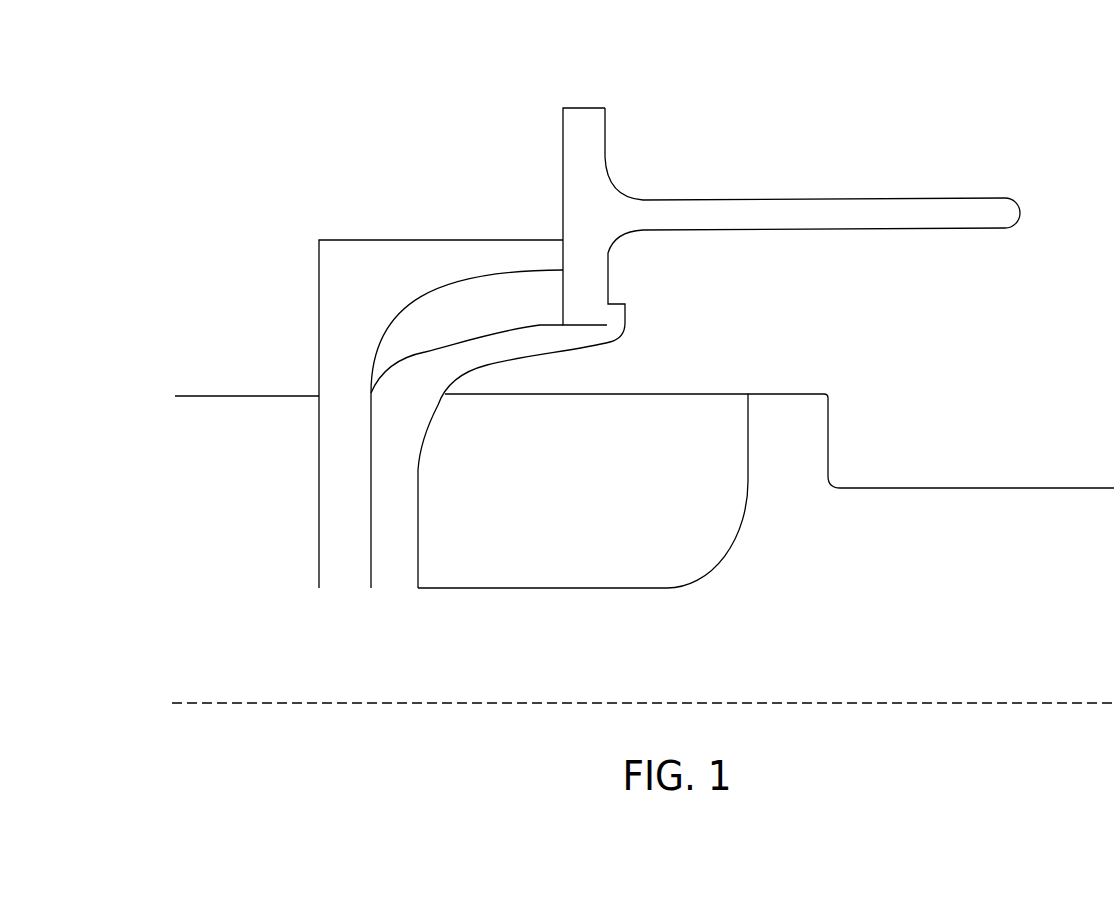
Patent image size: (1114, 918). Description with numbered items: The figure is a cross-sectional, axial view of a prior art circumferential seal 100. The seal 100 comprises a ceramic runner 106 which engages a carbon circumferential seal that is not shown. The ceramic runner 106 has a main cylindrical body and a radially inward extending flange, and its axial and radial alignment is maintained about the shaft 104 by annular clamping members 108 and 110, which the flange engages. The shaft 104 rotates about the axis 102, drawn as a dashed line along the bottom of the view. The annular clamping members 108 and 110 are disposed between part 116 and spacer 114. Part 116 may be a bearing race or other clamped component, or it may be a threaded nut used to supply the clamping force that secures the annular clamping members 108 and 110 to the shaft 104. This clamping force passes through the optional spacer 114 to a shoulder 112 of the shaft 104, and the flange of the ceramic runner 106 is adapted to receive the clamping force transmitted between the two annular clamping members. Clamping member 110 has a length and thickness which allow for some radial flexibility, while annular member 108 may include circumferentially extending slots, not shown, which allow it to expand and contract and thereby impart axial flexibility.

The circumferential seal 100 is at (1003, 113).
The axis 102 is at (423, 703).
The shaft 104 is at (863, 618).
The ceramic runner 106 is at (764, 228).
The annular clamping member 108 is at (341, 277).
The annular clamping member 110 is at (379, 475).
The shoulder 112 is at (863, 412).
The spacer 114 is at (541, 504).
The part 116 is at (209, 500).